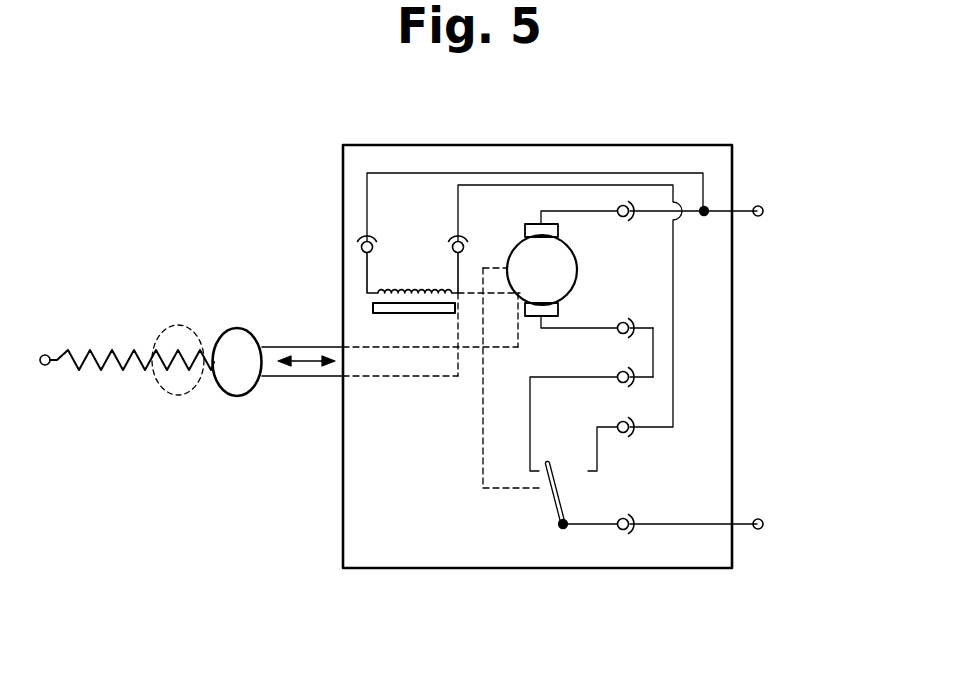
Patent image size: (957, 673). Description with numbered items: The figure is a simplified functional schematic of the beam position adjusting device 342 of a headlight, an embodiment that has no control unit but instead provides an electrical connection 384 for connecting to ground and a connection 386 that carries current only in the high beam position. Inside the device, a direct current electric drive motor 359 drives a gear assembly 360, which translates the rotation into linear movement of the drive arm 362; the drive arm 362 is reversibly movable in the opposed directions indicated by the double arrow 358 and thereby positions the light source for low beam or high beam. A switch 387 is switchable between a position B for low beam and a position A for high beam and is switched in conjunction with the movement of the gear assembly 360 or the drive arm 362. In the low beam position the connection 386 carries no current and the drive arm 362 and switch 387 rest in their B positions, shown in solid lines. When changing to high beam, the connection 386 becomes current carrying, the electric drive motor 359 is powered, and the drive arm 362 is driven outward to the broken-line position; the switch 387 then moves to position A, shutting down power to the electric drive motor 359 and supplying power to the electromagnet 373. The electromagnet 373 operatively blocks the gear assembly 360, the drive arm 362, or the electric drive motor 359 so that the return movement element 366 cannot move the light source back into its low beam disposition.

The beam position adjusting device 342 is at (320, 563).
The double arrow 358 is at (307, 363).
The direct current electric drive motor 359 is at (560, 277).
The gear assembly 360 is at (493, 311).
The drive arm 362 is at (244, 334).
The return movement element 366 is at (131, 352).
The electromagnet 373 is at (414, 280).
The electrical connection 384 is at (764, 208).
The connection 386 is at (764, 527).
The switch 387 is at (562, 500).